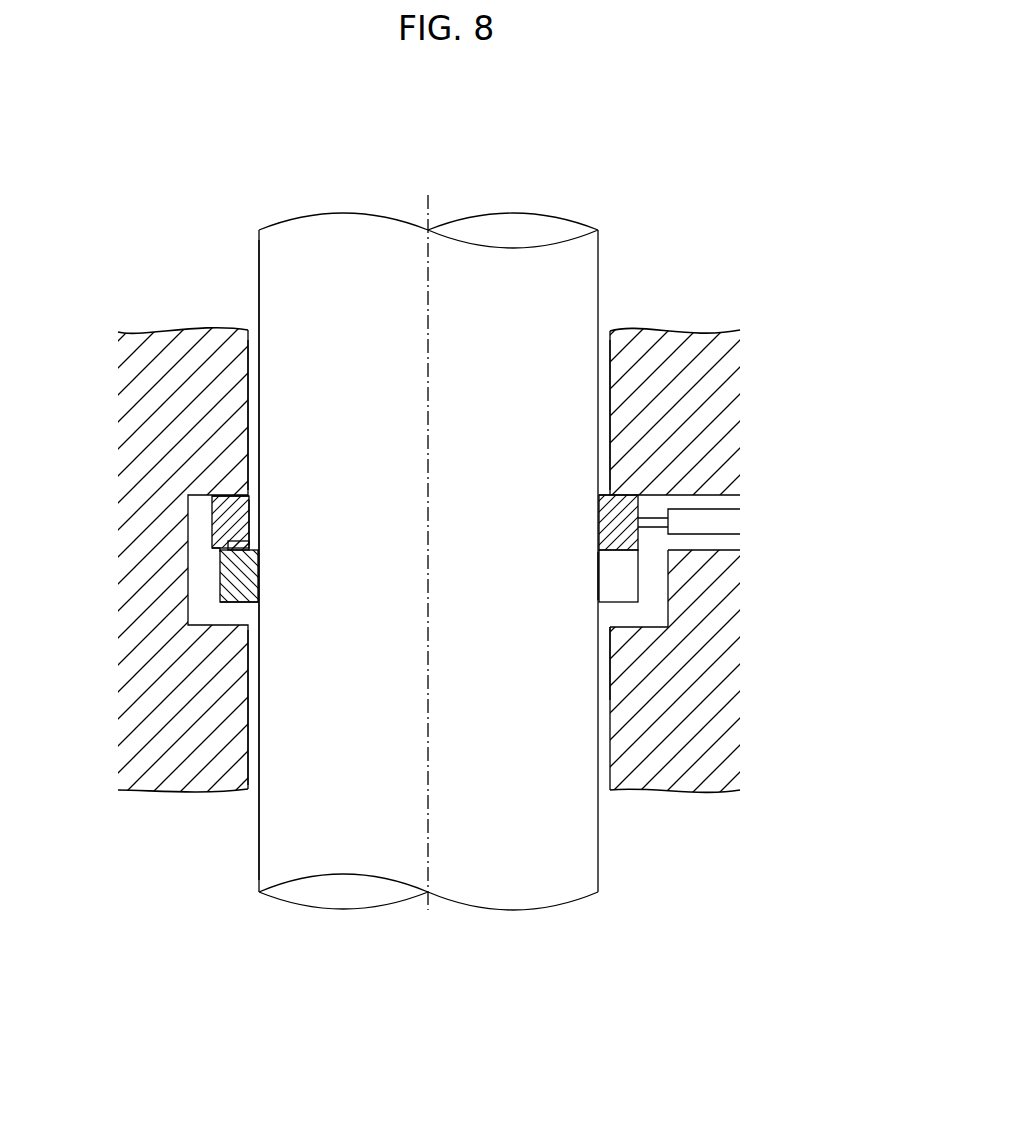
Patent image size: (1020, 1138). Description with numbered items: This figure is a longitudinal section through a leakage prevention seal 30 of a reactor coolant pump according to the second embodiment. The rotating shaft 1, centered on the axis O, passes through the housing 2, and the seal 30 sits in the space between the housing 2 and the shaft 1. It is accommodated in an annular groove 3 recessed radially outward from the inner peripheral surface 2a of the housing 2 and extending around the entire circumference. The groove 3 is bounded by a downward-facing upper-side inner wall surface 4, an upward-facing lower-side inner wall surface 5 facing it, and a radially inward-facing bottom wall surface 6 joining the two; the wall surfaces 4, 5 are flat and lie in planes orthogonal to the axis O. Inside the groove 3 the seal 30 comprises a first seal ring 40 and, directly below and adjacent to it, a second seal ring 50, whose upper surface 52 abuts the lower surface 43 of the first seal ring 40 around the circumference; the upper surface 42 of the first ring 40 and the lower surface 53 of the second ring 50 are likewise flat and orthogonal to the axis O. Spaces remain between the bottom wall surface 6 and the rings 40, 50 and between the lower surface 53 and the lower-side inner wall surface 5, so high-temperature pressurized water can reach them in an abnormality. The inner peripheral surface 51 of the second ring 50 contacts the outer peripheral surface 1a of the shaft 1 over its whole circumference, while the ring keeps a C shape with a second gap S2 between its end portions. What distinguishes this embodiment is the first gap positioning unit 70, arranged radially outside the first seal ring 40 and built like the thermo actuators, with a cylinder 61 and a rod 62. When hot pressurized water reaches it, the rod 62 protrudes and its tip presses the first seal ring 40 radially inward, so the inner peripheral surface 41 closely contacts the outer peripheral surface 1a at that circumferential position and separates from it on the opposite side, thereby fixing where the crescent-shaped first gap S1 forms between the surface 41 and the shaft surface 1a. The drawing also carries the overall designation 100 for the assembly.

The rotating shaft 1 is at (270, 246).
The outer peripheral surface of the rotating shaft 1a is at (257, 287).
The housing 2 is at (133, 375).
The inner peripheral surface of the housing 2a is at (262, 792).
The annular groove 3 is at (604, 618).
The upper-side inner wall surface 4 is at (670, 495).
The lower-side inner wall surface 5 is at (662, 605).
The bottom wall surface 6 is at (660, 572).
The leakage prevention seal 30 is at (610, 311).
The first seal ring 40 is at (596, 521).
The inner peripheral surface of the first seal ring 41 is at (253, 503).
The upper surface of the first seal ring 42 is at (232, 497).
The lower surface of the first seal ring 43 is at (237, 552).
The second seal ring 50 is at (589, 582).
The inner peripheral surface of the second seal ring 51 is at (261, 585).
The upper surface of the second seal ring 52 is at (230, 547).
The lower surface of the second seal ring 53 is at (233, 603).
The cylinder 61 is at (713, 533).
The rod 62 is at (652, 530).
The first gap positioning unit 70 is at (742, 503).
The sealing device 100 is at (638, 162).
The axis O is at (430, 207).
The first gap S1 is at (255, 515).
The second gap S2 is at (610, 572).